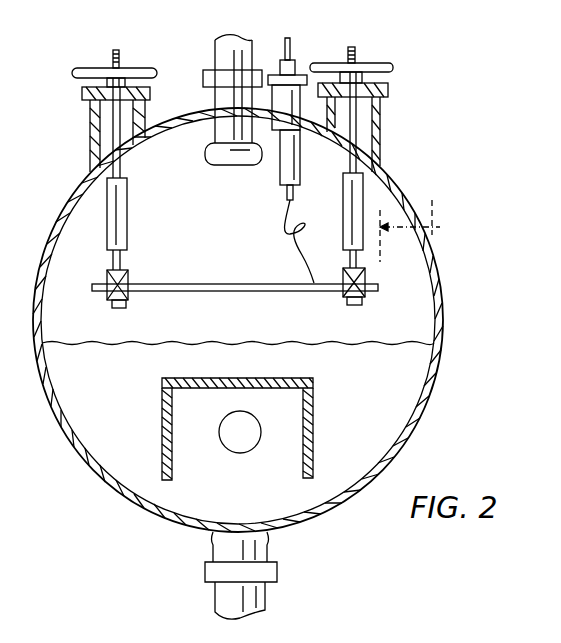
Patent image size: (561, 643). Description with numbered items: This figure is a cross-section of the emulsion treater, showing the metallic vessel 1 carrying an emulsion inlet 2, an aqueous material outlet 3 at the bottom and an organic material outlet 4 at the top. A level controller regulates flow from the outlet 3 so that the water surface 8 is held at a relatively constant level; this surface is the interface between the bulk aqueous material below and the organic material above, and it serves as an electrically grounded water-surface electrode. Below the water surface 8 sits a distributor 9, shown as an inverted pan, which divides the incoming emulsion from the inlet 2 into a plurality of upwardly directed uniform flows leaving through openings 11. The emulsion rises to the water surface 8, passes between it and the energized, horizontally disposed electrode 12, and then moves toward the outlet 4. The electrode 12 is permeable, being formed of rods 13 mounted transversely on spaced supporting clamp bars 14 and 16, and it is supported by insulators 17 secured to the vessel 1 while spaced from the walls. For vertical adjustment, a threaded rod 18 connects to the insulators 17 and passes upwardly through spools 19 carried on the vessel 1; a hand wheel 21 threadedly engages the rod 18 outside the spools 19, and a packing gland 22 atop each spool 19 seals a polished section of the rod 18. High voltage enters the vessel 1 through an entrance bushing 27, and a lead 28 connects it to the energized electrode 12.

The metallic vessel 1 is at (436, 410).
The emulsion inlet 2 is at (252, 446).
The aqueous material outlet 3 is at (270, 548).
The organic material outlet 4 is at (222, 100).
The water surface 8 is at (318, 343).
The distributor 9 is at (313, 432).
The openings 11 is at (313, 395).
The electrode 12 is at (104, 272).
The rods 13 is at (172, 284).
The supporting clamp bar 14 is at (365, 262).
The supporting clamp bar 16 is at (365, 290).
The insulators 17 is at (127, 200).
The threaded rod 18 is at (115, 114).
The spools 19 is at (90, 146).
The hand wheel 21 is at (146, 68).
The packing gland 22 is at (107, 83).
The entrance bushing 27 is at (293, 102).
The lead 28 is at (300, 232).